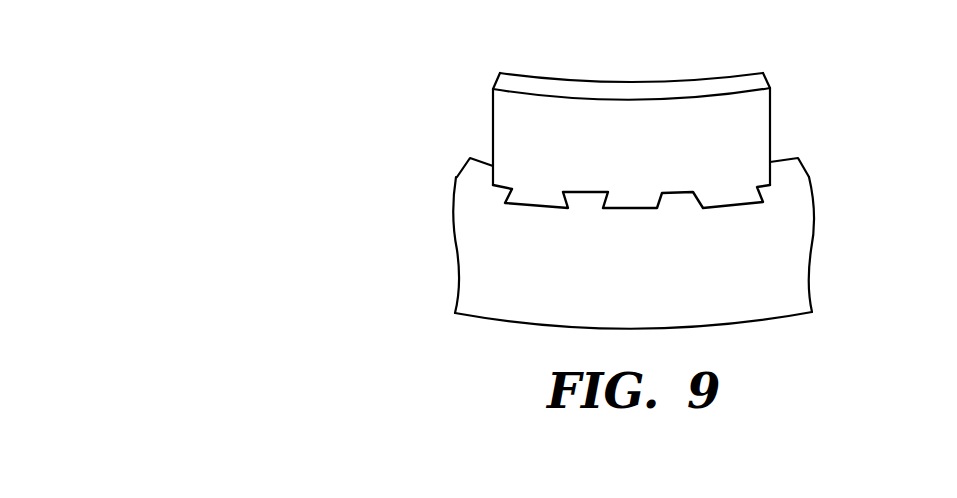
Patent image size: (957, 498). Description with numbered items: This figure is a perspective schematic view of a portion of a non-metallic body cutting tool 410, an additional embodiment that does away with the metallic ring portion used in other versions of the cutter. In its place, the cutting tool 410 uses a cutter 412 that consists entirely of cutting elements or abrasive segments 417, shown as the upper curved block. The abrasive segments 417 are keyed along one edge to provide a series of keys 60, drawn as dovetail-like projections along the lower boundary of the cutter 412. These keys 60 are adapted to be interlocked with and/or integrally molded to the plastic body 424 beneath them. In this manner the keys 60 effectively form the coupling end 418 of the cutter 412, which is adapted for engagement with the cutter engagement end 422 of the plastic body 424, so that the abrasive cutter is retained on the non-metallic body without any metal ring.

The cutting tool 410 is at (587, 208).
The cutter 412 is at (541, 106).
The abrasive segments 417 is at (627, 118).
The coupling end 418 is at (716, 190).
The cutter engagement end 422 is at (790, 168).
The plastic body 424 is at (793, 280).
The keys 60 is at (534, 196).